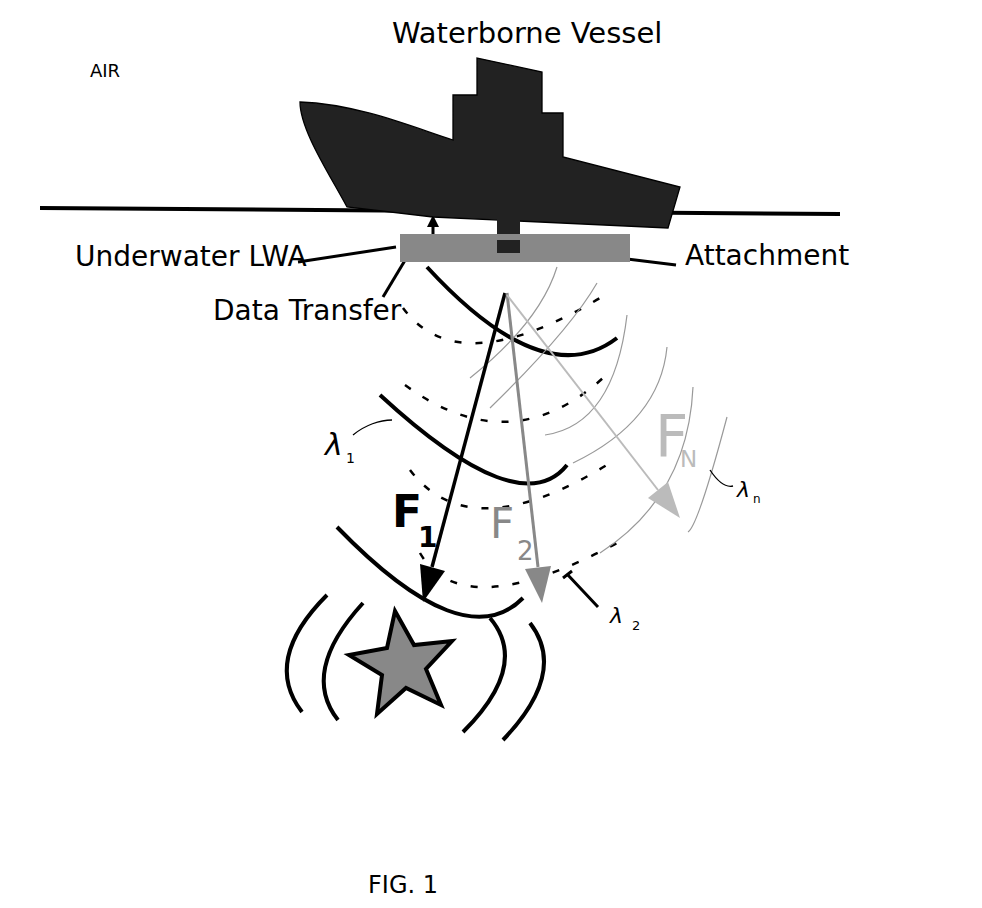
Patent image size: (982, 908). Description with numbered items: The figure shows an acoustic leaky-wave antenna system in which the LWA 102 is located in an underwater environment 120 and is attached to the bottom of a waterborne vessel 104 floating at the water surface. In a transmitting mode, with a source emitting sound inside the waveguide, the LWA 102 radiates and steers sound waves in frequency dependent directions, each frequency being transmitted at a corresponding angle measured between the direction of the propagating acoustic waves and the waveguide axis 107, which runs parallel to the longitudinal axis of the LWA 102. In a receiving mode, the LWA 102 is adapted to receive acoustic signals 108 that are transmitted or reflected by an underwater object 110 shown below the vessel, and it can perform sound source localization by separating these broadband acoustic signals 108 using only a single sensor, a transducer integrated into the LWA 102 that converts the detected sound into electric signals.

The LWA 102 is at (617, 265).
The waterborne vessel 104 is at (580, 167).
The waveguide axis 107 is at (628, 246).
The acoustic signals 108 is at (530, 712).
The underwater object 110 is at (408, 697).
The underwater environment 120 is at (432, 314).